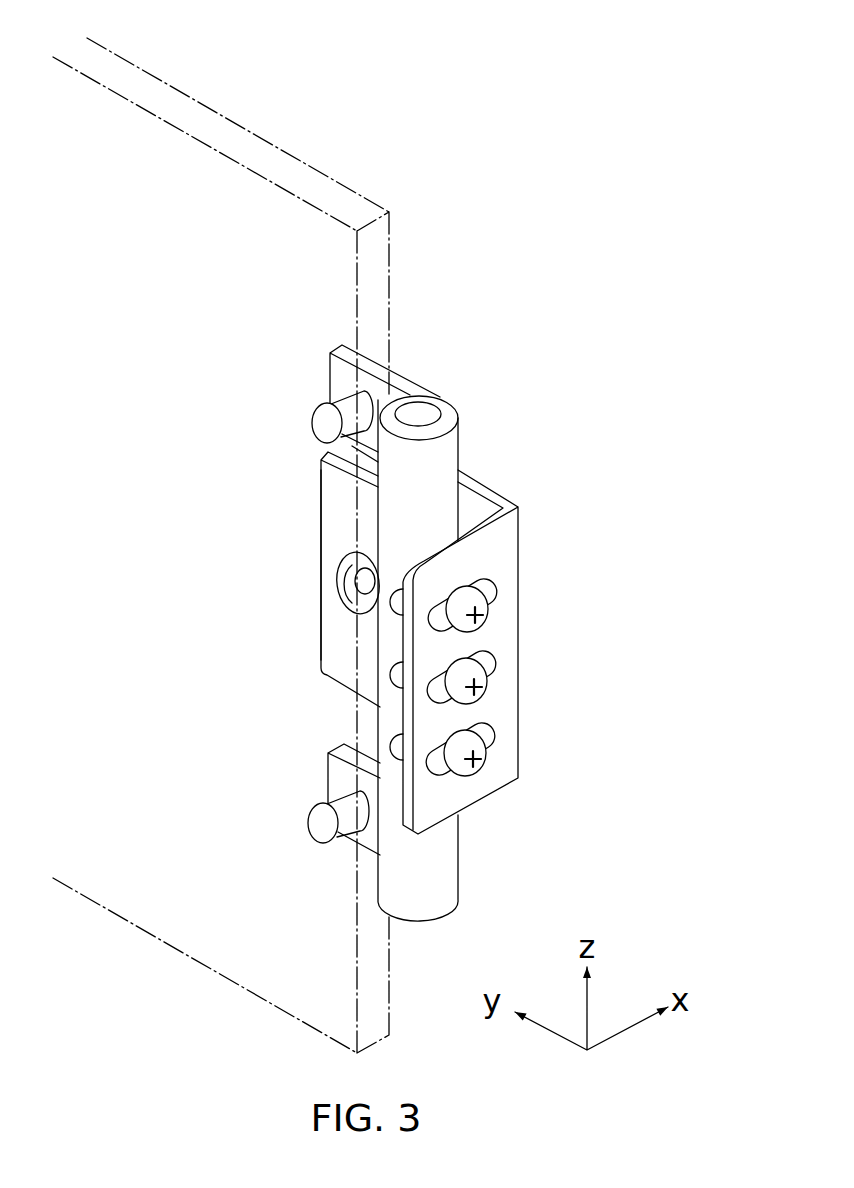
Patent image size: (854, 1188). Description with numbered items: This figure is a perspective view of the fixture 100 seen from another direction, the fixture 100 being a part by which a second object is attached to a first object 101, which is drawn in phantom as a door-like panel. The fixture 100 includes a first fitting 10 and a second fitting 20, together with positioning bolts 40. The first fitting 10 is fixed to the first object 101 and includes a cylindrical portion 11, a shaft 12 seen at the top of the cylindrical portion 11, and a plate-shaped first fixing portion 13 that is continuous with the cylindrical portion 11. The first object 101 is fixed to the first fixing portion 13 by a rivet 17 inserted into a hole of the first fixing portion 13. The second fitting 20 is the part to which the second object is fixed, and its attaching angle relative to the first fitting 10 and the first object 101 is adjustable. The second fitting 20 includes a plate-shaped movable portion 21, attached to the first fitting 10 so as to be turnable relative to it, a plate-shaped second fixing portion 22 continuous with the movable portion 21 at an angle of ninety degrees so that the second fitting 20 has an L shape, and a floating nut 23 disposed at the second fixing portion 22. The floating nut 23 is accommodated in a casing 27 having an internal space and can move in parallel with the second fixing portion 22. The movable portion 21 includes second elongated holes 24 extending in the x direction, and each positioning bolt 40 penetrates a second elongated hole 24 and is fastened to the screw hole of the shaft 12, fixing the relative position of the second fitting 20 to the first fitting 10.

The first object 101 is at (206, 126).
The fixture 100 is at (575, 315).
The first fitting 10 is at (461, 432).
The cylindrical portion 11 is at (448, 463).
The shaft 12 is at (440, 397).
The first fixing portion 13 is at (340, 378).
The rivet 17 is at (326, 427).
The second fitting 20 is at (523, 578).
The movable portion 21 is at (508, 768).
The second fixing portion 22 is at (336, 670).
The floating nut 23 is at (351, 599).
The second elongated hole 24 is at (495, 592).
The casing 27 is at (332, 537).
The positioning bolt 40 is at (468, 596).